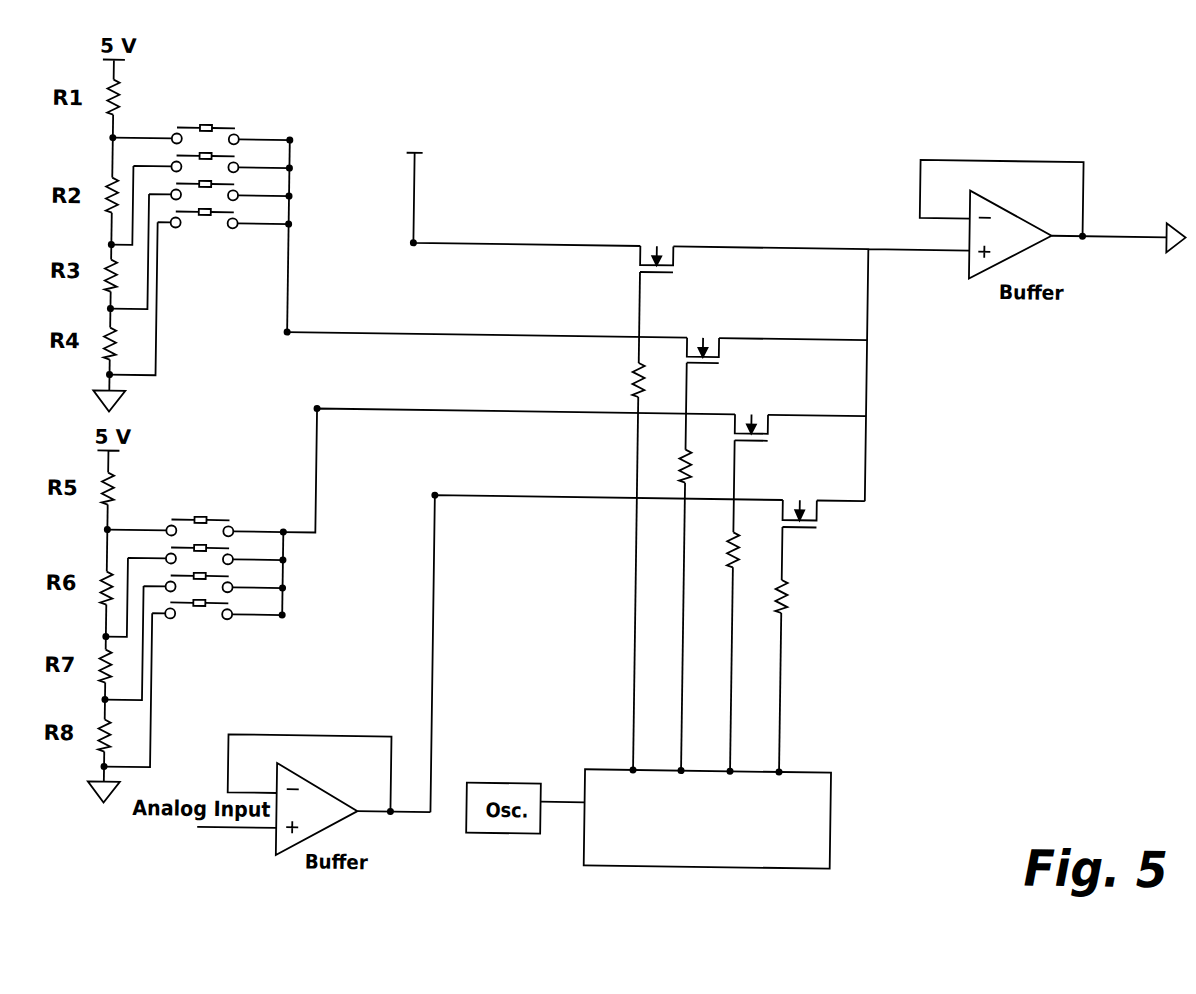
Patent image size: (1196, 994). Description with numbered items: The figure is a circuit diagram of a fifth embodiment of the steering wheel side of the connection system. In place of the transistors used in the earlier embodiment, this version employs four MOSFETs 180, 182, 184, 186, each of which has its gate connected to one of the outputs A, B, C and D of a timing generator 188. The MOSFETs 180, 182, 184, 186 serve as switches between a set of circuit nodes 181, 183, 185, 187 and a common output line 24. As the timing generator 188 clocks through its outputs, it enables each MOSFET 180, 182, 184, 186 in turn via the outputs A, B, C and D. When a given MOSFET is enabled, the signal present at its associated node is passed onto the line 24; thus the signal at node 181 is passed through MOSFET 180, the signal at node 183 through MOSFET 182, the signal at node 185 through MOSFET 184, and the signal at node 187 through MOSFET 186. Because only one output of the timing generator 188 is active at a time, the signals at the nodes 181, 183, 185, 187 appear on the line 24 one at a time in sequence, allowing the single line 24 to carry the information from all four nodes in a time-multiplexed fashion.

The mosfet 180 is at (657, 238).
The node 181 is at (521, 188).
The mosfet 182 is at (701, 331).
The node 183 is at (486, 322).
The mosfet 184 is at (749, 409).
The node 185 is at (509, 458).
The mosfet 186 is at (798, 497).
The node 187 is at (603, 642).
The timing generator 188 is at (815, 786).
The line 24 is at (1112, 231).